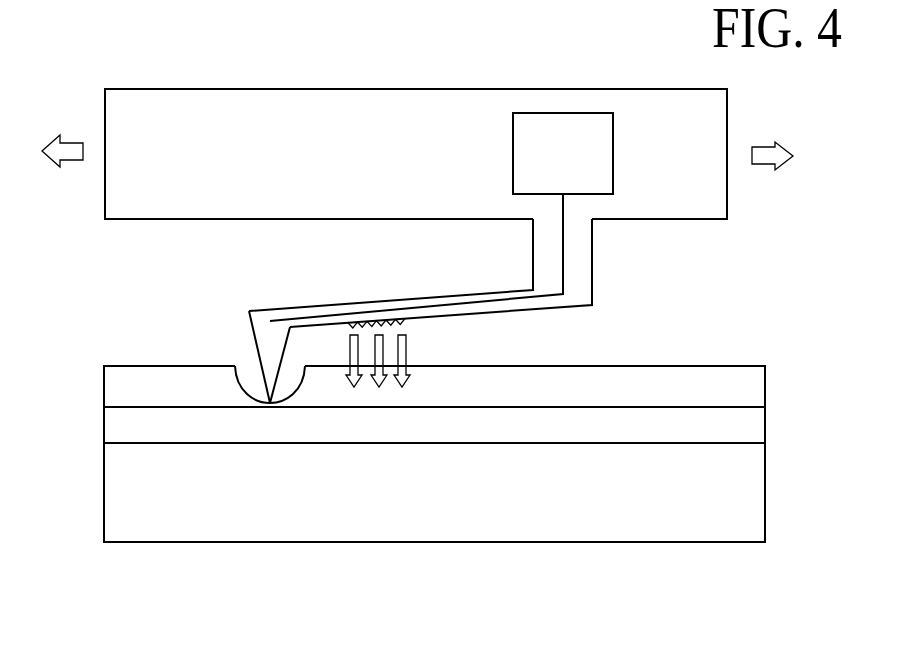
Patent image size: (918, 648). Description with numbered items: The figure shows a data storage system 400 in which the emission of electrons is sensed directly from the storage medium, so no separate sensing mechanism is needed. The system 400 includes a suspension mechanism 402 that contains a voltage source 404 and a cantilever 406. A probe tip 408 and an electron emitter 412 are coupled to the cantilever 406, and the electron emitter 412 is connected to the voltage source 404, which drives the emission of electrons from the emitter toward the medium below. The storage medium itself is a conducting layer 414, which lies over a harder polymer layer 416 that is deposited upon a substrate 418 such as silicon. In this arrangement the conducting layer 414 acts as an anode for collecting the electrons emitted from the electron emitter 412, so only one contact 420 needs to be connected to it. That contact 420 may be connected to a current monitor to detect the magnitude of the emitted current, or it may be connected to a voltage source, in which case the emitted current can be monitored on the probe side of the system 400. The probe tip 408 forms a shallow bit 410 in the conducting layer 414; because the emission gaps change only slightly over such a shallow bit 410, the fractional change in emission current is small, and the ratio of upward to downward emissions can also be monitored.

The data storage system 400 is at (131, 45).
The suspension mechanism 402 is at (657, 88).
The voltage source 404 is at (613, 155).
The cantilever 406 is at (592, 268).
The probe tip 408 is at (243, 335).
The shallow bit 410 is at (246, 365).
The electron emitter 412 is at (407, 327).
The conducting layer 414 is at (765, 388).
The harder polymer layer 416 is at (765, 423).
The substrate 418 is at (765, 497).
The contact 420 is at (140, 366).